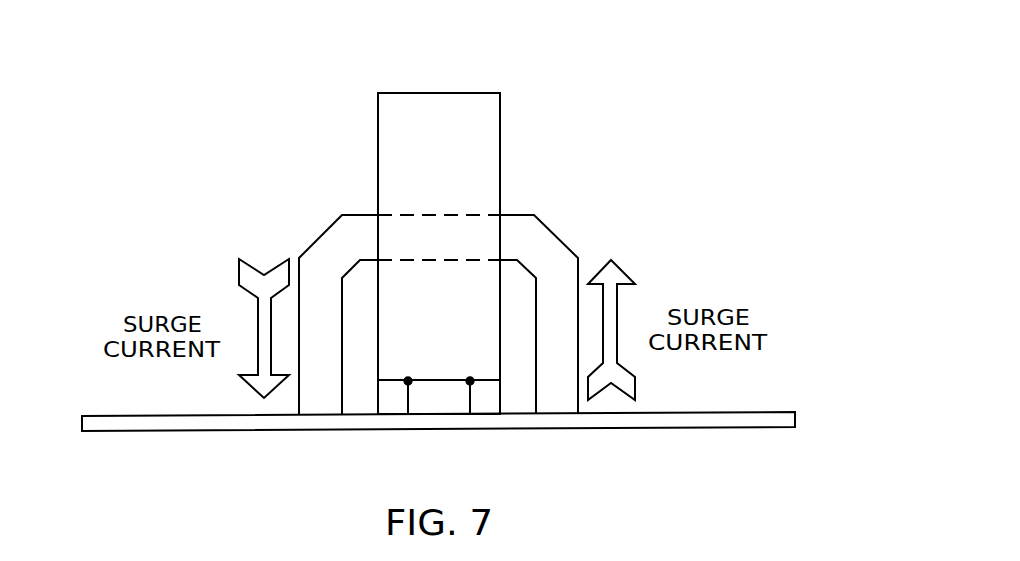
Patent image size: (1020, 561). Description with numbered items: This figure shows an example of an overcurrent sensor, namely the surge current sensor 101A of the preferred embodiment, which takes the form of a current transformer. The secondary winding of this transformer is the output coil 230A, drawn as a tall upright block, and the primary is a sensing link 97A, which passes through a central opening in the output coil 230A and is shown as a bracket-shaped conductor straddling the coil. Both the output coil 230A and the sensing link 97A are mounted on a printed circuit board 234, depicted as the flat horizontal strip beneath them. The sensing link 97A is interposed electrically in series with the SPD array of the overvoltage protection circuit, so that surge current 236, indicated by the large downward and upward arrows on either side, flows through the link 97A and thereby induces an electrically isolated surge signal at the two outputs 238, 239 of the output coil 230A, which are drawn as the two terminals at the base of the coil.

The surge current sensor 101A is at (639, 147).
The sensing link 97A is at (558, 240).
The output coil 230A is at (470, 102).
The printed circuit board 234 is at (796, 412).
The surge current 236 is at (252, 379).
The output of coil 238 is at (410, 386).
The output of coil 239 is at (472, 386).